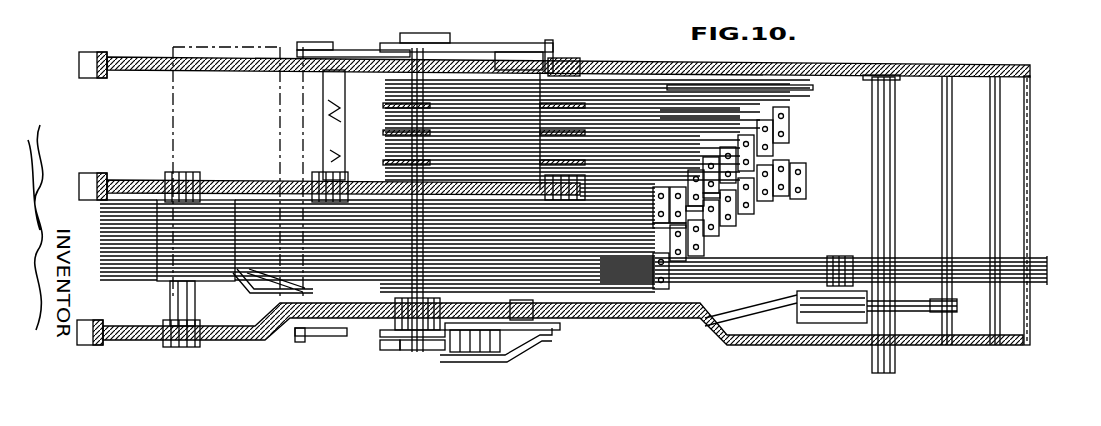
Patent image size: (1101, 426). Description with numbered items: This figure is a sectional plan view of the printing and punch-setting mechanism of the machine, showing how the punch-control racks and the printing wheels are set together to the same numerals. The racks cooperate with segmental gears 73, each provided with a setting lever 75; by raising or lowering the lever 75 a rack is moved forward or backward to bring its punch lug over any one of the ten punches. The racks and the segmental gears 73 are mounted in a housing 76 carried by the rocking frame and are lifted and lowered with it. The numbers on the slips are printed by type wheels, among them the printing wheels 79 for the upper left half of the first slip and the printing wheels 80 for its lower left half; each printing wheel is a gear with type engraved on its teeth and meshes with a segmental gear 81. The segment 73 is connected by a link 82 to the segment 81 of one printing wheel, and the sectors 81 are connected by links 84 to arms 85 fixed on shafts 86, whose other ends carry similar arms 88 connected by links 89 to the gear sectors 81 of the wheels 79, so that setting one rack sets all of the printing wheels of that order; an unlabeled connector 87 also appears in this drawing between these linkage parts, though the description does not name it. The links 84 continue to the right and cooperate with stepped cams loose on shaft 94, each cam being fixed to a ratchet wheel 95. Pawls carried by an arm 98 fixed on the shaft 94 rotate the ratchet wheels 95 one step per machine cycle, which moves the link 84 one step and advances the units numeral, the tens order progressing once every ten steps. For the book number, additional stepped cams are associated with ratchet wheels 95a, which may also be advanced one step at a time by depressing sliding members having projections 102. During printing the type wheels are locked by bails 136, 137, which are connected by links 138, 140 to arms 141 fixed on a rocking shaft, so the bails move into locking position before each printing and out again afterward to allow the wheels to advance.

The segmental gear 73 is at (213, 270).
The setting lever 75 is at (101, 268).
The housing 76 is at (141, 70).
The printing wheel 79 is at (552, 63).
The printing wheel 80 is at (452, 105).
The segmental gear 81 is at (468, 80).
The link 82 is at (262, 200).
The link 84 is at (615, 278).
The arm 85 is at (707, 336).
The shaft 86 is at (785, 156).
The link connector 87 is at (653, 213).
The arm 88 is at (795, 90).
The link 89 is at (700, 113).
The shaft 94 is at (873, 360).
The ratchet wheel 95 is at (930, 313).
The ratchet wheel 95a is at (920, 258).
The arm 98 is at (837, 320).
The projection 102 is at (1050, 281).
The locking bail 136 is at (400, 283).
The locking bail 137 is at (517, 52).
The link 138 is at (362, 50).
The link 140 is at (505, 43).
The arm 141 is at (395, 350).